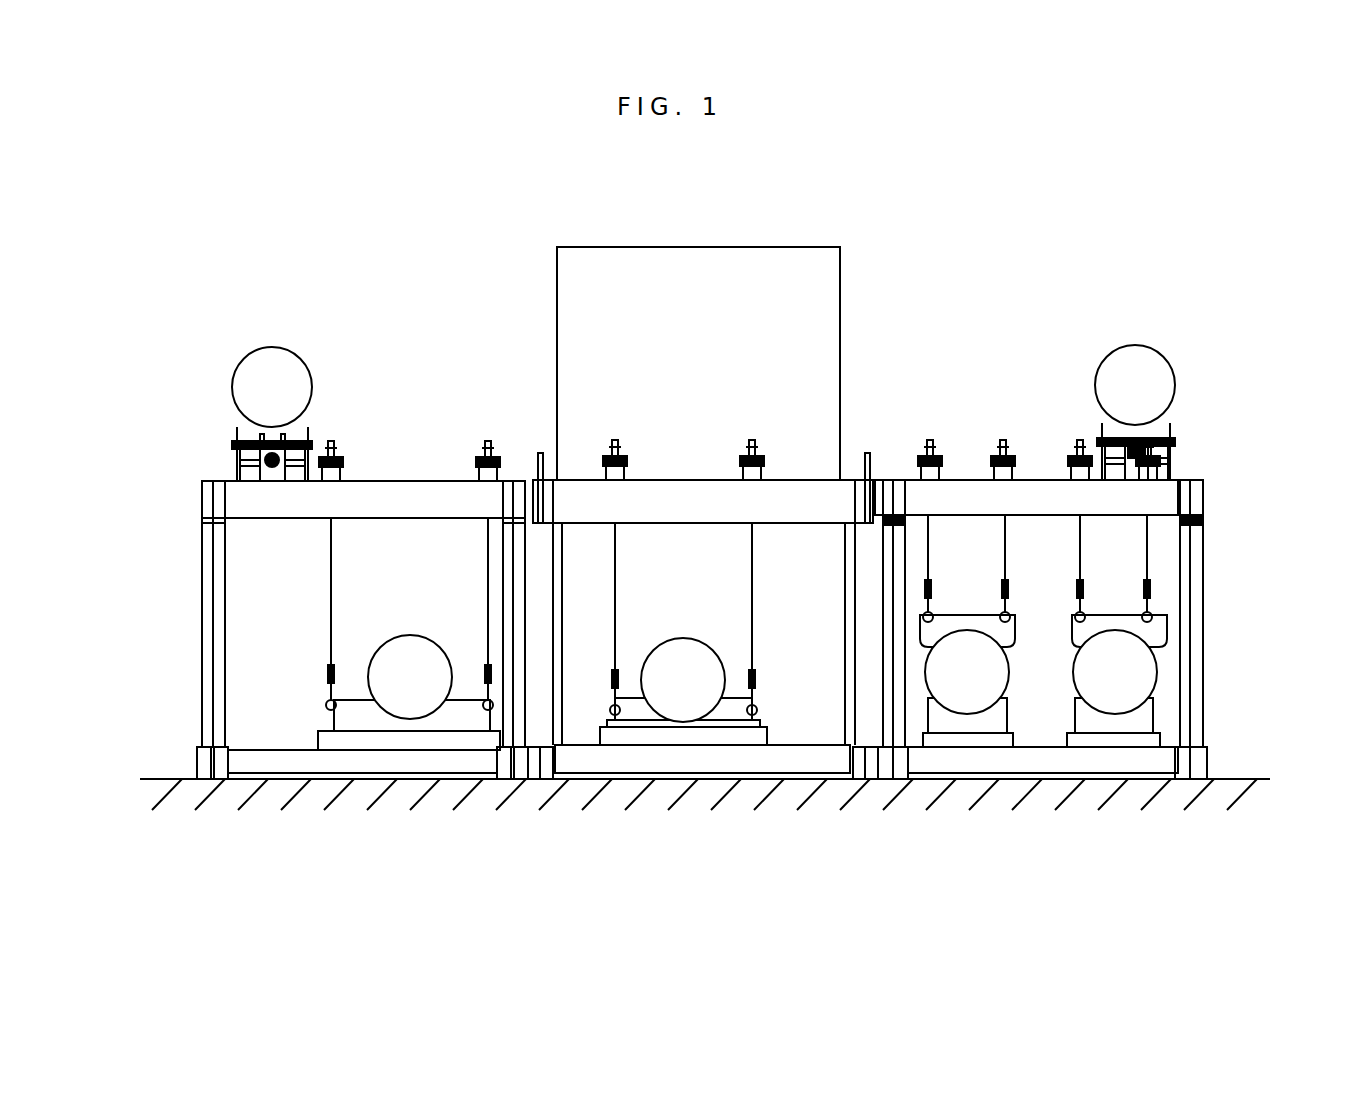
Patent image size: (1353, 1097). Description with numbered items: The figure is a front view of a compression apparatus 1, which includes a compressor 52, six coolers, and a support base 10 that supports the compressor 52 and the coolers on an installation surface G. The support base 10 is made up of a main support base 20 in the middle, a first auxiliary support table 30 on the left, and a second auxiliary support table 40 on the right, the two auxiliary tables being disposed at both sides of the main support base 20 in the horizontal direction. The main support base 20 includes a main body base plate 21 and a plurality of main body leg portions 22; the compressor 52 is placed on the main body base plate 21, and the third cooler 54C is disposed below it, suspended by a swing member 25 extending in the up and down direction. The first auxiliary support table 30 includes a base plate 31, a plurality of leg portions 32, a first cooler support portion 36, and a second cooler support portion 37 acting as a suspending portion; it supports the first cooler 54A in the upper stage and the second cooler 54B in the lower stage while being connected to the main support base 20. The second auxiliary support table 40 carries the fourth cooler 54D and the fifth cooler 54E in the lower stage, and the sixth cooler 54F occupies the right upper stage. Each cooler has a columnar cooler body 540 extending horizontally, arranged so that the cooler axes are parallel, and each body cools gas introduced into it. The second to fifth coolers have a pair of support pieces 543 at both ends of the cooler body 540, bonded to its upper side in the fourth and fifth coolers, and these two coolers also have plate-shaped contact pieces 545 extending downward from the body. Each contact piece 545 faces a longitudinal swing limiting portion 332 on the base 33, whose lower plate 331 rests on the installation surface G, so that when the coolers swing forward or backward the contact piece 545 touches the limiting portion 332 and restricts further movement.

The compression apparatus 1 is at (1164, 260).
The support base 10 is at (692, 604).
The main support base 20 is at (705, 579).
The main body base plate 21 is at (802, 533).
The main body leg portions 22 is at (565, 570).
The swing member 25 is at (752, 535).
The first auxiliary support table 30 is at (383, 479).
The base plate 31 is at (277, 523).
The leg portions 32 is at (503, 545).
The base 33 is at (702, 817).
The base plate 331 is at (385, 760).
The longitudinal swing limiting portion 332 is at (447, 742).
The first cooler support portion 36 is at (235, 456).
The second cooler support portion 37 is at (330, 625).
The second auxiliary support table 40 is at (1040, 473).
The compressor 52 is at (764, 247).
The first cooler 54A is at (262, 350).
The second cooler 54B is at (384, 641).
The third cooler 54C is at (722, 650).
The fourth cooler 54D is at (919, 682).
The fifth cooler 54E is at (1160, 659).
The sixth cooler 54F is at (1172, 395).
The cooler body 540 is at (365, 650).
The support piece 543 is at (322, 712).
The contact piece 545 is at (935, 727).
The installation surface G is at (163, 778).